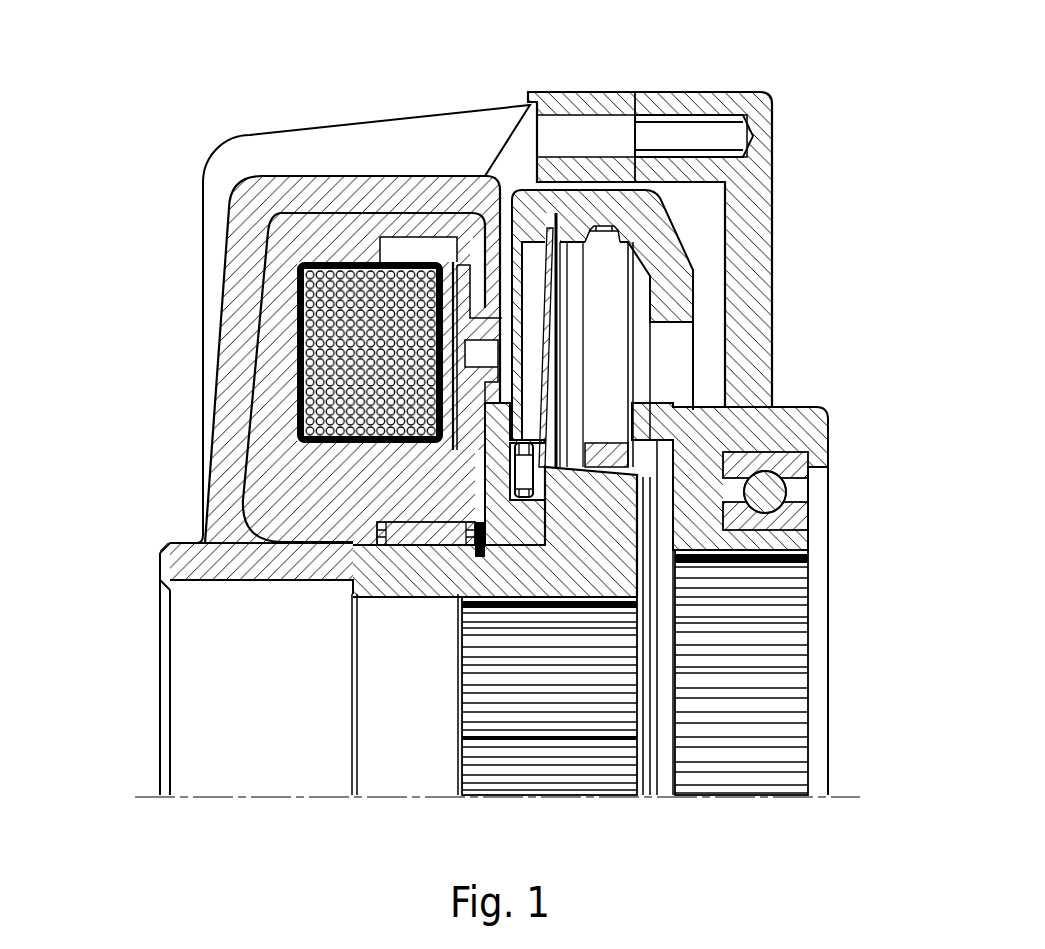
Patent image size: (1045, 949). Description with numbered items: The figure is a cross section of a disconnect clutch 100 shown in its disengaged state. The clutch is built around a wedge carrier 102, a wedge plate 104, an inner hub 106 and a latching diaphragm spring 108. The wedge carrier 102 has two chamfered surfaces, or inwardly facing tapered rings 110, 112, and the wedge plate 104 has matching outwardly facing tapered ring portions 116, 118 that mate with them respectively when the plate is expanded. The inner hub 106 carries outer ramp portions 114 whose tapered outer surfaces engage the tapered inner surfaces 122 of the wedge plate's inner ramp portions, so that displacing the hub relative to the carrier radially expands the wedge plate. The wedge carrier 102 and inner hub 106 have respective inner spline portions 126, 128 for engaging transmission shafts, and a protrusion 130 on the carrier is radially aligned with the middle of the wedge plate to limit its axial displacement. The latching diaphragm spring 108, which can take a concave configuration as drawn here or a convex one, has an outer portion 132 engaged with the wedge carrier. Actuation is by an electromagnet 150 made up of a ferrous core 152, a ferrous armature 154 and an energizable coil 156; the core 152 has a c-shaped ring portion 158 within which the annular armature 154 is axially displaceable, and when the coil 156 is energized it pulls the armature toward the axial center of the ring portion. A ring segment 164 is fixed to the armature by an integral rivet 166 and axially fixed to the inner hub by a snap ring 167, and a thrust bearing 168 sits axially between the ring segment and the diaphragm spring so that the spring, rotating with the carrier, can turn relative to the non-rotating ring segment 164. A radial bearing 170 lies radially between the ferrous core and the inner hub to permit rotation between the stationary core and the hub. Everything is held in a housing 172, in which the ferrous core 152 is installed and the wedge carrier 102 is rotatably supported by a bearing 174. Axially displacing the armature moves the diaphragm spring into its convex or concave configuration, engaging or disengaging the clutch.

The disconnect clutch 100 is at (335, 80).
The wedge carrier 102 is at (700, 198).
The wedge plate 104 is at (680, 226).
The inner hub 106 is at (648, 495).
The latching diaphragm spring 108 is at (538, 300).
The inwardly facing tapered ring 110 is at (556, 216).
The inwardly facing tapered ring 112 is at (723, 143).
The outer ramp portion 114 is at (690, 452).
The outwardly facing tapered ring portion 116 is at (606, 222).
The outwardly facing tapered ring portion 118 is at (635, 175).
The tapered inner surface 122 is at (660, 425).
The inner spline portion 126 is at (760, 600).
The inner spline portion 128 is at (500, 760).
The protrusion 130 is at (655, 395).
The outer portion 132 is at (513, 257).
The electromagnet 150 is at (197, 377).
The ferrous core 152 is at (257, 300).
The ferrous armature 154 is at (473, 285).
The energizable coil 156 is at (296, 268).
The c-shaped ring portion 158 is at (470, 455).
The ring segment 164 is at (527, 500).
The integral rivet 166 is at (655, 322).
The snap ring 167 is at (395, 560).
The thrust bearing 168 is at (547, 470).
The radial bearing 170 is at (415, 530).
The housing 172 is at (297, 197).
The bearing 174 is at (770, 490).